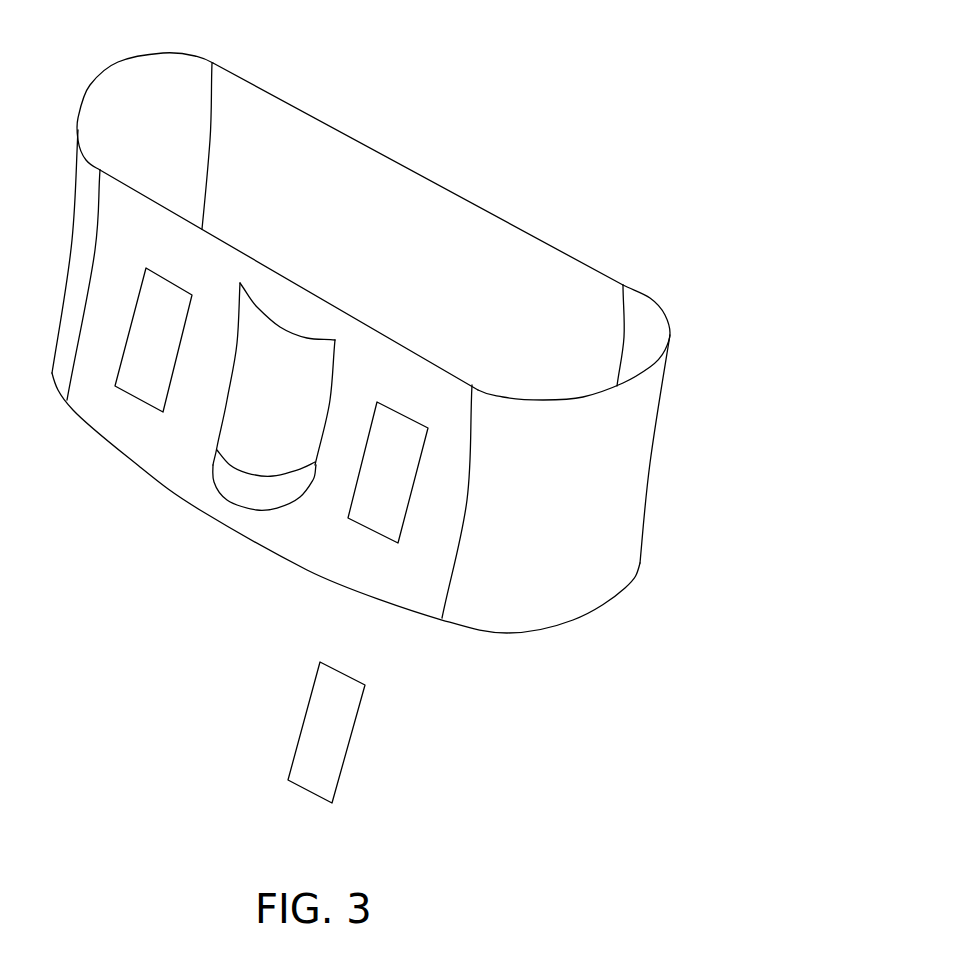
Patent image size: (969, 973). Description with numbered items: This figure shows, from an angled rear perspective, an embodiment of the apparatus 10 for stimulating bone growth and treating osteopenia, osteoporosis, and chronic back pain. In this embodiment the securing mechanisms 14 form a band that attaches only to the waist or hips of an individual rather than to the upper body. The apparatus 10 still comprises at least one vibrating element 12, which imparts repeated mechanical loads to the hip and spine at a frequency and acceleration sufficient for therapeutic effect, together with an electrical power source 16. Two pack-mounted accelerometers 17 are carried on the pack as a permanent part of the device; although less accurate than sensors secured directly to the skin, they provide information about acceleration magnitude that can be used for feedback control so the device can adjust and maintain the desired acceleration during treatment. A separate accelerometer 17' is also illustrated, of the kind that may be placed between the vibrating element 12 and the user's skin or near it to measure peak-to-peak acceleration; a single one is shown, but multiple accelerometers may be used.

The apparatus 10 is at (376, 322).
The vibrating element 12 is at (237, 447).
The securing mechanisms 14 is at (632, 472).
The electrical power source 16 is at (267, 493).
The pack-mounted accelerometers 17 is at (271, 291).
The accelerometer 17' is at (356, 732).